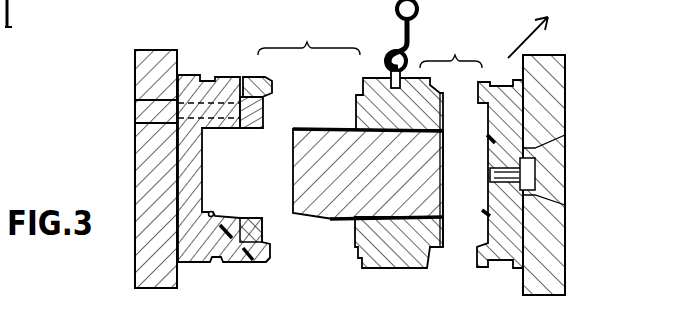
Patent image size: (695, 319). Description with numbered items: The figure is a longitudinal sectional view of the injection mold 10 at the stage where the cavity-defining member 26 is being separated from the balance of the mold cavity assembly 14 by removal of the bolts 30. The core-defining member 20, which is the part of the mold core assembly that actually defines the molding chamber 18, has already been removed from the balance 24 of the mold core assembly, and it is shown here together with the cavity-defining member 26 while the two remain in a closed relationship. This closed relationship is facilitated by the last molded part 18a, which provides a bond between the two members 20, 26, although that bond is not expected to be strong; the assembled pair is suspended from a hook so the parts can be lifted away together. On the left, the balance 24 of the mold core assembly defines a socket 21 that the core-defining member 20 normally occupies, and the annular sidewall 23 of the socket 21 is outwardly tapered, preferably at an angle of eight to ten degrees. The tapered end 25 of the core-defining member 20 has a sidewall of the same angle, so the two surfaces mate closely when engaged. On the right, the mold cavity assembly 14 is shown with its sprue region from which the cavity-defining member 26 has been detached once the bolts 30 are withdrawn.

The injection mold 10 is at (110, 0).
The mold cavity assembly 14 is at (553, 97).
The molding chamber 18 is at (404, 213).
The last molded part 18a is at (334, 128).
The core-defining member 20 is at (382, 187).
The socket 21 is at (217, 158).
The annular sidewall 23 is at (220, 128).
The balance of the mold core assembly 24 is at (234, 76).
The tapered end 25 is at (300, 129).
The cavity-defining member 26 is at (390, 248).
The bolts 30 is at (478, 100).